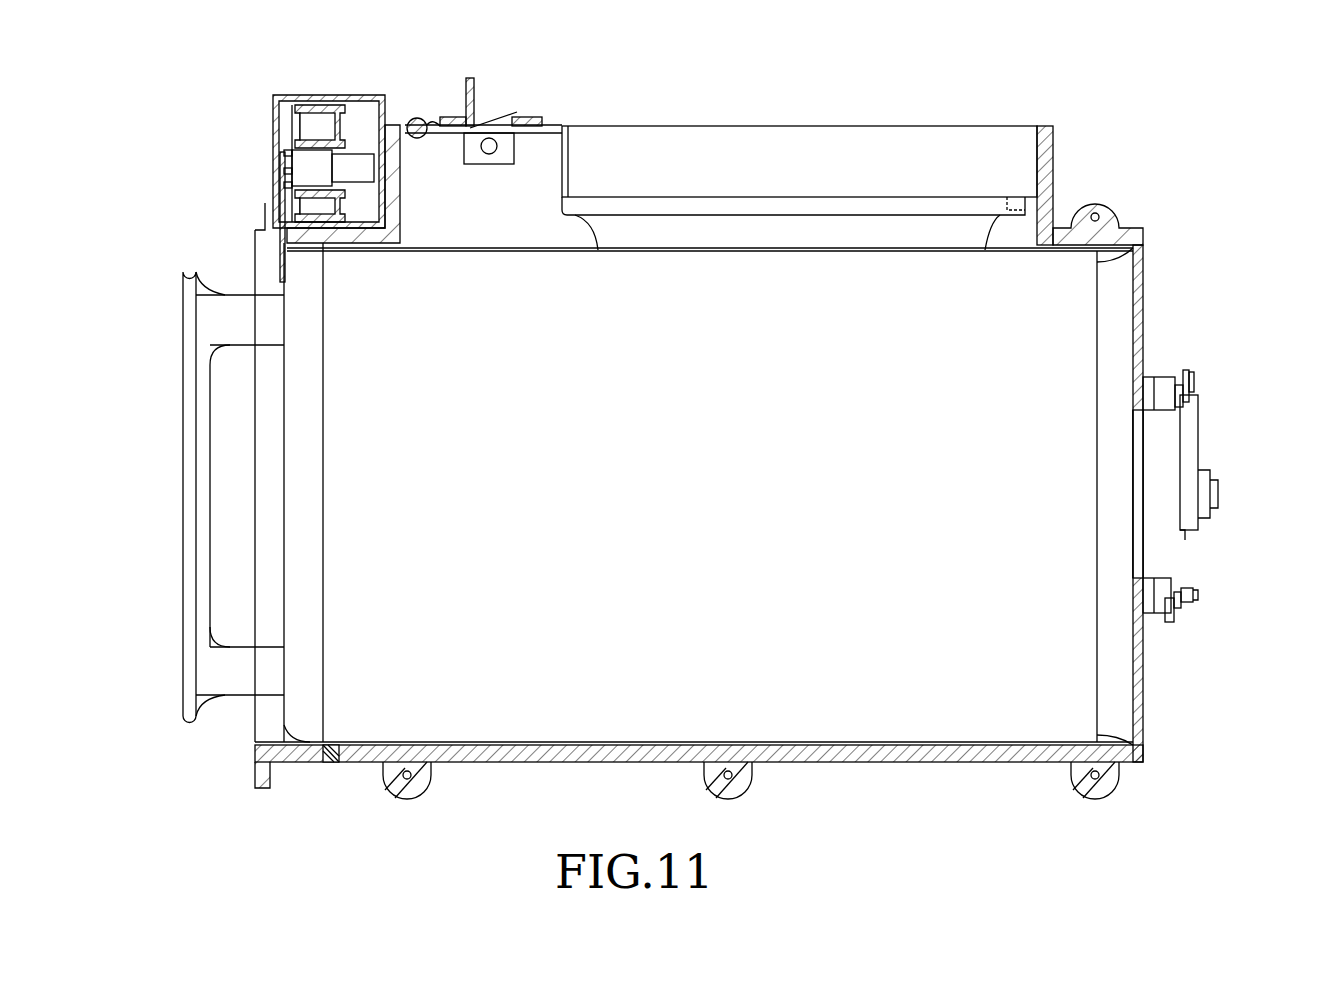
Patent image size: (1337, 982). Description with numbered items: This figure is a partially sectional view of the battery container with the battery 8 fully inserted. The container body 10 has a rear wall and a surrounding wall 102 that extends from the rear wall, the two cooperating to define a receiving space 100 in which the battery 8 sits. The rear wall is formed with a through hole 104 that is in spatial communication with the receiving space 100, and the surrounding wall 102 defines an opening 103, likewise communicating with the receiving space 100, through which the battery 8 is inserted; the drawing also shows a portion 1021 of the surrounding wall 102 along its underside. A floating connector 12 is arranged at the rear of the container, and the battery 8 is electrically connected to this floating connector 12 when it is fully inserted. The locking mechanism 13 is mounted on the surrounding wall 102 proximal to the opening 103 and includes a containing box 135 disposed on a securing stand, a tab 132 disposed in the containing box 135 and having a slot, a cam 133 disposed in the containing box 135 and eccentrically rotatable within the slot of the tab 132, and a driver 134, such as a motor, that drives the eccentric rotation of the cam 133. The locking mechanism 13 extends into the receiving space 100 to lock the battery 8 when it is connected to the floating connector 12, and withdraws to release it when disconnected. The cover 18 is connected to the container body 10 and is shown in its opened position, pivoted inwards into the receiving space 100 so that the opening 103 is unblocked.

The container body 10 is at (1072, 139).
The battery 8 is at (1078, 322).
The cover 18 is at (830, 200).
The locking mechanism 13 is at (264, 96).
The containing box 135 is at (378, 96).
The driver 134 is at (315, 160).
The cam 133 is at (285, 150).
The tab 132 is at (283, 246).
The receiving space 100 is at (265, 273).
The opening 103 is at (250, 722).
The surrounding wall 102 is at (472, 762).
The wheel bracket 1021 is at (958, 762).
The floating connector 12 is at (1172, 446).
The through hole 104 is at (1138, 558).